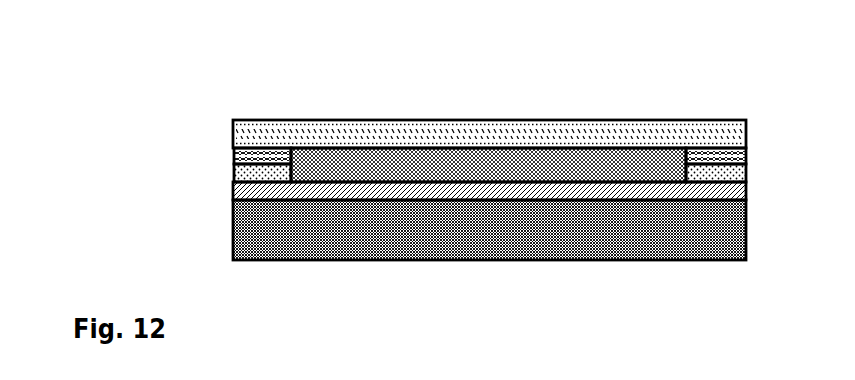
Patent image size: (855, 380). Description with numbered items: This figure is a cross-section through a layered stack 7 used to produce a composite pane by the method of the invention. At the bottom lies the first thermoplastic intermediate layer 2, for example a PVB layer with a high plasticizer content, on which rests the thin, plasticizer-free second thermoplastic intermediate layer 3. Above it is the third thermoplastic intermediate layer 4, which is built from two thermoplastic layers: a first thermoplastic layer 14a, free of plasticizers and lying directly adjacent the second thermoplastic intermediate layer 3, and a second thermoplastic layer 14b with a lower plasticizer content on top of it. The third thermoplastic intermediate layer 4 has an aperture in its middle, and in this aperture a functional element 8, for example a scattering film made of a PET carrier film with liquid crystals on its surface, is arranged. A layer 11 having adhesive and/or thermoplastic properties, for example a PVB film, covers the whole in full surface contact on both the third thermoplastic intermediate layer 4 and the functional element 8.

The first thermoplastic intermediate layer 2 is at (243, 248).
The second thermoplastic intermediate layer 3 is at (238, 196).
The third thermoplastic intermediate layer 4 is at (750, 152).
The layered stack 7 is at (218, 94).
The functional element 8 is at (665, 150).
The layer having adhesive and/or thermoplastic properties 11 is at (665, 125).
The first thermoplastic layer 14a is at (240, 153).
The second thermoplastic layer 14b is at (240, 174).